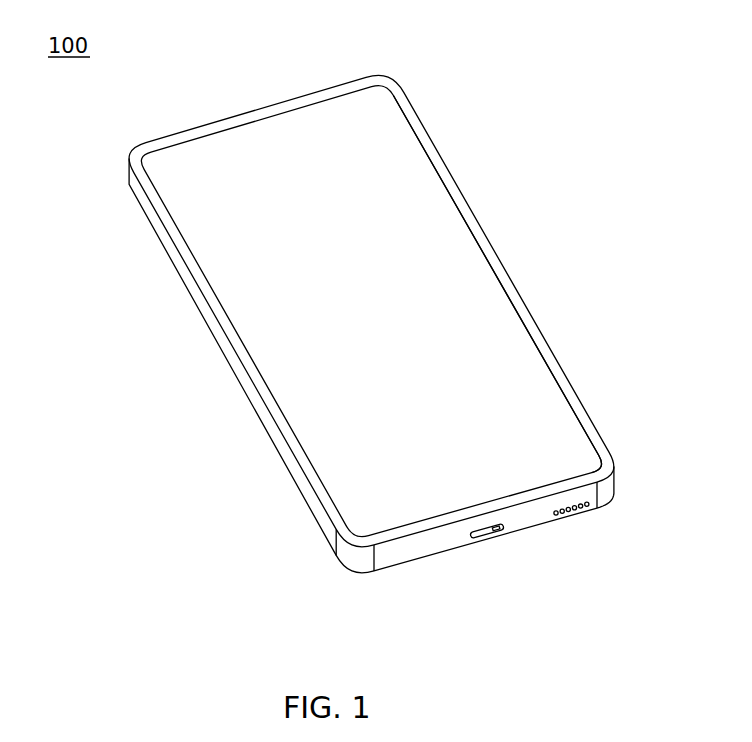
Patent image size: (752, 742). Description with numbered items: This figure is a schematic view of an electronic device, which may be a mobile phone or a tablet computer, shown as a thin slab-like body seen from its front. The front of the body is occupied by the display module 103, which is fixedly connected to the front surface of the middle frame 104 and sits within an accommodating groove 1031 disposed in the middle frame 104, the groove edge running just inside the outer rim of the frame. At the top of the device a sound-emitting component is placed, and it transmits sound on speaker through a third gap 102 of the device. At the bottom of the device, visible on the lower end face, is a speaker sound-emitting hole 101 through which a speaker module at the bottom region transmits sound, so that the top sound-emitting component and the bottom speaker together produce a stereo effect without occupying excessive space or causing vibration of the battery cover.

The speaker sound-emitting hole 101 is at (572, 515).
The third gap 102 is at (263, 108).
The display module 103 is at (468, 260).
The accommodating groove 1031 is at (578, 418).
The middle frame 104 is at (245, 382).